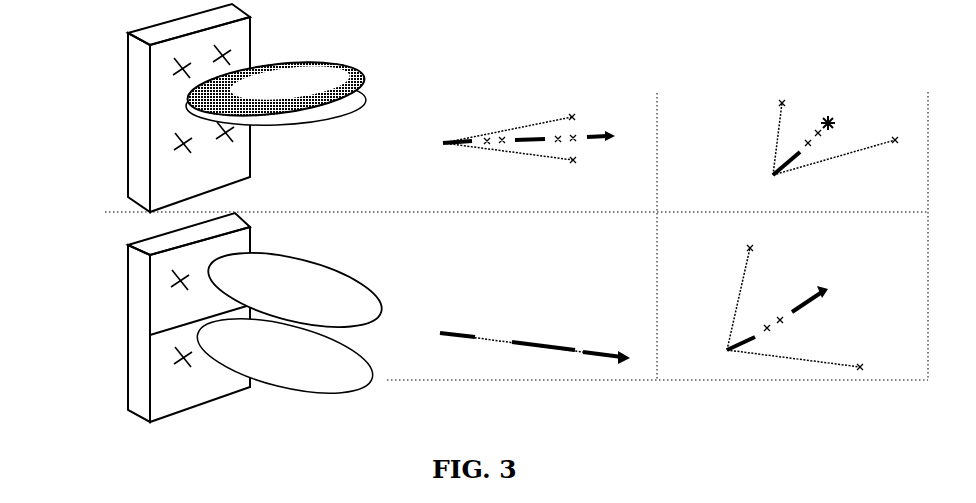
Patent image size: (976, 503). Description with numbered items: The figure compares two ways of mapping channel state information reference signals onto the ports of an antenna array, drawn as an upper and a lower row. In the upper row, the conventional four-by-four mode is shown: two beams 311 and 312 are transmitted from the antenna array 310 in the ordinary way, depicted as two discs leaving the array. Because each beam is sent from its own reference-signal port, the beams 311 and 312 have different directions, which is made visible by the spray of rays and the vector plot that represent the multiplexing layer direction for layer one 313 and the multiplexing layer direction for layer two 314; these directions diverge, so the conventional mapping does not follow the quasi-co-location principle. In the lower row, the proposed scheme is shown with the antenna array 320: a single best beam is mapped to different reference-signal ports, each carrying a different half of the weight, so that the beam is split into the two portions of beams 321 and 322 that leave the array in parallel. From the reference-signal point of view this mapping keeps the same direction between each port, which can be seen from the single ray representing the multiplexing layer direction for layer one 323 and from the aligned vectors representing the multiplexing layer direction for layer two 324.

The antenna array 310 is at (128, 72).
The beam 311 is at (327, 65).
The beam 312 is at (332, 117).
The multiplexing layer direction for layer1 313 is at (593, 135).
The multiplexing layer direction for layer2 314 is at (828, 118).
The antenna array 320 is at (128, 295).
The portion of beam 321 is at (350, 285).
The portion of beam 322 is at (322, 398).
The multiplexing layer direction for layer1 323 is at (488, 335).
The multiplexing layer direction for layer2 324 is at (802, 292).